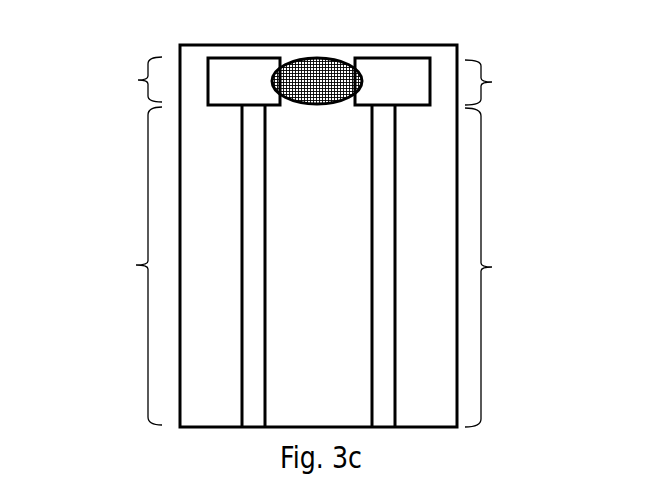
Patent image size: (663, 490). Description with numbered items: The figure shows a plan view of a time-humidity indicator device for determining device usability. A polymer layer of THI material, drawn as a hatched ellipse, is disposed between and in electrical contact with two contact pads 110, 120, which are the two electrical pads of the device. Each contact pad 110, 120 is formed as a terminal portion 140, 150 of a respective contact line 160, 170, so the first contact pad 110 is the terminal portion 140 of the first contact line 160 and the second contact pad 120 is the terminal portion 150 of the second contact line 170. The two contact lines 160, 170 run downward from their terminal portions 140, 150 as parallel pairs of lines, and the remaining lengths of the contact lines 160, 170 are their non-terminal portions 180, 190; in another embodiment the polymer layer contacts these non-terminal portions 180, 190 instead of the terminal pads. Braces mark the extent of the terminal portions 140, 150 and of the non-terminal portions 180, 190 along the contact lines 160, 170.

The contact pad 110 is at (250, 63).
The contact pad 120 is at (382, 72).
The terminal portion 140 is at (137, 80).
The terminal portion 150 is at (493, 82).
The contact line 160 is at (248, 208).
The contact line 170 is at (383, 172).
The non-terminal portion 180 is at (135, 265).
The non-terminal portion 190 is at (493, 267).